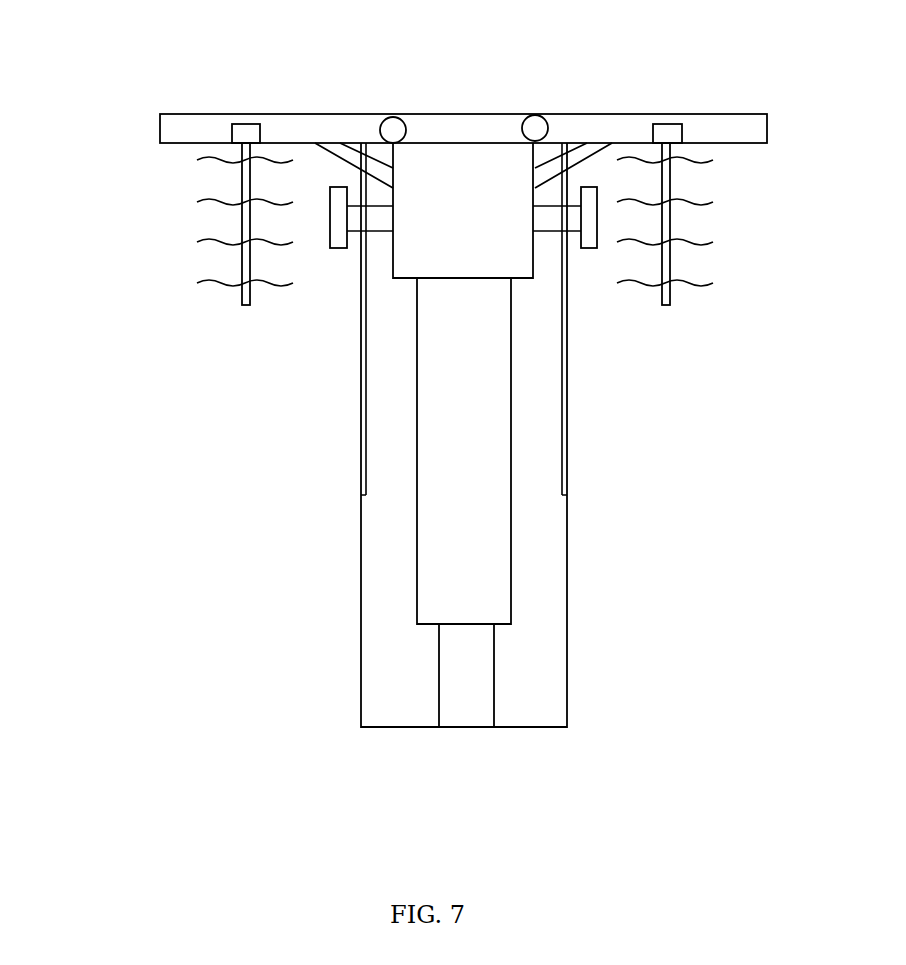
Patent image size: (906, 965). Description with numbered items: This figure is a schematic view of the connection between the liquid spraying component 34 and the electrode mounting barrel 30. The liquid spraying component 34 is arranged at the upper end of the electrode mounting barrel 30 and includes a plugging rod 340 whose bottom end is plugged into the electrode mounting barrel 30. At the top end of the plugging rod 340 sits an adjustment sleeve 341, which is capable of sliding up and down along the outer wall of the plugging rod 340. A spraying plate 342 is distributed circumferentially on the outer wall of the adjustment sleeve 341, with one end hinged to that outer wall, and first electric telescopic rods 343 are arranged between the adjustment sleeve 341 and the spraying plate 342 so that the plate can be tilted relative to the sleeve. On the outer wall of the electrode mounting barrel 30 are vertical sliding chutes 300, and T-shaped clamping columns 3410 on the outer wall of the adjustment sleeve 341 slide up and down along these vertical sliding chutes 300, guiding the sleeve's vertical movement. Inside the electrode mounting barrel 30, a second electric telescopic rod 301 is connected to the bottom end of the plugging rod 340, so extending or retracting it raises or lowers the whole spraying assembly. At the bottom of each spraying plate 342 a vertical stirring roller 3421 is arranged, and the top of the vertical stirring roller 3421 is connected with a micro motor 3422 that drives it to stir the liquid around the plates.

The electrode mounting barrel 30 is at (368, 642).
The vertical sliding chute 300 is at (363, 442).
The second electric telescopic rod 301 is at (458, 685).
The plugging rod 340 is at (502, 530).
The adjustment sleeve 341 is at (430, 256).
The T-shaped clamping column 3410 is at (583, 249).
The liquid spraying component 34 is at (393, 115).
The spraying plate 342 is at (180, 132).
The micro motor 3422 is at (245, 122).
The vertical stirring roller 3421 is at (242, 242).
The first electric telescopic rod 343 is at (342, 152).